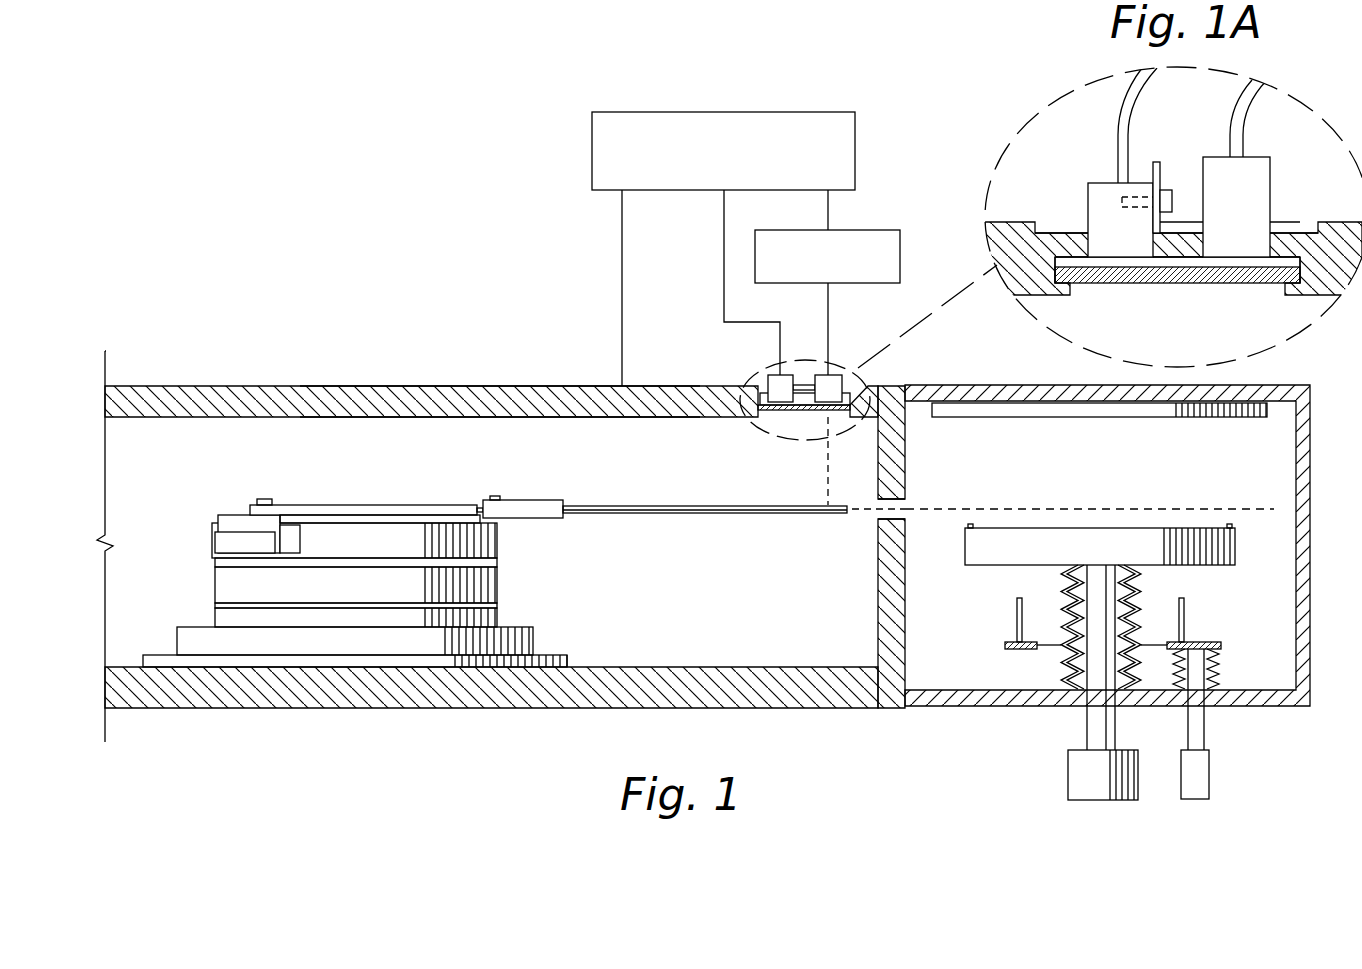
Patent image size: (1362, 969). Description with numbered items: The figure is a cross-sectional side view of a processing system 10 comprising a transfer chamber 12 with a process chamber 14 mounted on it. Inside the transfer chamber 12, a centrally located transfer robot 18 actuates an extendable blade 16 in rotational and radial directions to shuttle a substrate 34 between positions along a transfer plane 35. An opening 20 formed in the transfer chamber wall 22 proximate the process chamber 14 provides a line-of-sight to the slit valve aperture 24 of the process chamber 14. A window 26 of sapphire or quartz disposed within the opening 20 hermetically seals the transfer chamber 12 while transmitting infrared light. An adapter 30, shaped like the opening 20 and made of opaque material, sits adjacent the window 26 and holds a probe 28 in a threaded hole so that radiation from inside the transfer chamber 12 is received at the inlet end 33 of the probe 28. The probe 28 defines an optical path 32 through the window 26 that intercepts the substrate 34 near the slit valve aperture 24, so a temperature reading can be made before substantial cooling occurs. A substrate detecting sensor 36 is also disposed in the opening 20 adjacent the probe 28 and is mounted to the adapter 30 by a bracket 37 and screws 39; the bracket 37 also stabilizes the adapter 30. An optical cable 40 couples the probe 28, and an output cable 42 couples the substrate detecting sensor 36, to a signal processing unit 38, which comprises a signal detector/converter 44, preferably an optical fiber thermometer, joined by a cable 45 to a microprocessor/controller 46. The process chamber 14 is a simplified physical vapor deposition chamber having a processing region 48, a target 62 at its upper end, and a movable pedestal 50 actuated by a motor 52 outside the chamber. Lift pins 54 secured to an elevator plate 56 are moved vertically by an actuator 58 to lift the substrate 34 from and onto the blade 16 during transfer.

In FIG. 1, the processing system 10 is at (363, 316).
In FIG. 1, the transfer chamber 12 is at (239, 386).
In FIG. 1A, the transfer chamber 12 is at (1360, 222).
In FIG. 1, the process chamber 14 is at (1312, 478).
In FIG. 1, the extendable blade 16 is at (575, 520).
In FIG. 1, the transfer robot 18 is at (497, 590).
In FIG. 1, the opening 20 is at (748, 405).
In FIG. 1A, the opening 20 is at (1312, 230).
In FIG. 1, the transfer chamber wall 22 is at (467, 385).
In FIG. 1A, the transfer chamber wall 22 is at (1320, 295).
In FIG. 1, the slit valve aperture 24 is at (908, 513).
In FIG. 1, the window 26 is at (782, 411).
In FIG. 1A, the window 26 is at (1180, 284).
In FIG. 1, the probe 28 is at (838, 373).
In FIG. 1A, the probe 28 is at (1271, 165).
In FIG. 1, the adapter 30 is at (800, 386).
In FIG. 1A, the adapter 30 is at (1062, 235).
In FIG. 1, the optical path 32 is at (828, 489).
In FIG. 1A, the inlet end 33 is at (1233, 260).
In FIG. 1, the substrate 34 is at (666, 505).
In FIG. 1, the transfer plane 35 is at (1216, 507).
In FIG. 1, the substrate detecting sensor 36 is at (773, 373).
In FIG. 1A, the substrate detecting sensor 36 is at (1096, 182).
In FIG. 1A, the bracket 37 is at (1157, 160).
In FIG. 1, the signal processing unit 38 is at (942, 320).
In FIG. 1A, the screws 39 is at (1174, 190).
In FIG. 1, the optical cable 40 is at (828, 305).
In FIG. 1A, the optical cable 40 is at (1246, 118).
In FIG. 1, the output cable 42 is at (724, 257).
In FIG. 1A, the output cable 42 is at (1118, 118).
In FIG. 1, the signal detector/converter 44 is at (900, 258).
In FIG. 1, the cable 45 is at (828, 209).
In FIG. 1, the microprocessor/controller 46 is at (855, 150).
In FIG. 1, the processing region 48 is at (1115, 490).
In FIG. 1, the movable pedestal 50 is at (1239, 546).
In FIG. 1, the motor 52 is at (1068, 769).
In FIG. 1, the lift pins 54 is at (1018, 617).
In FIG. 1, the elevator plate 56 is at (1216, 638).
In FIG. 1, the actuator 58 is at (1211, 774).
In FIG. 1, the target 62 is at (1033, 419).